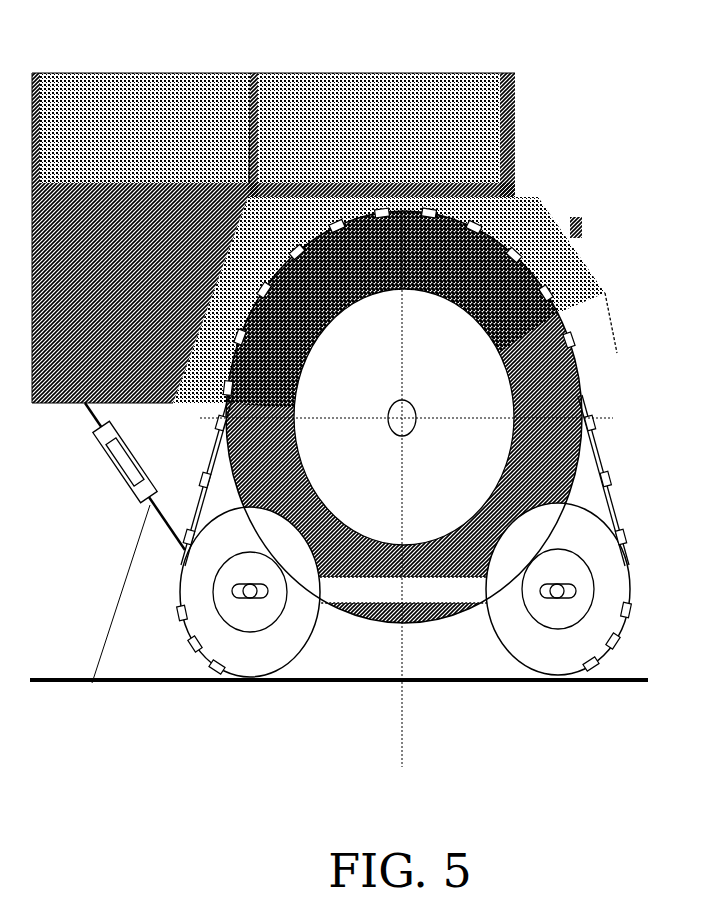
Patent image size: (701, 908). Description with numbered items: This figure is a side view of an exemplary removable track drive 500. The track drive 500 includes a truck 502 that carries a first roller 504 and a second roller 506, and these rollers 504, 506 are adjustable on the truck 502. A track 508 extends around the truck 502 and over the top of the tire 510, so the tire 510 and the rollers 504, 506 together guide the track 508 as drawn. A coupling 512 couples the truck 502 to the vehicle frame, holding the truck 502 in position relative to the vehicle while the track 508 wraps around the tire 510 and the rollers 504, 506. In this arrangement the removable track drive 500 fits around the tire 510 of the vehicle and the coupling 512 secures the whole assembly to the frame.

The track system 500 is at (84, 43).
The track 502 is at (472, 654).
The front idler wheel 504 is at (317, 653).
The rear idler wheel 506 is at (570, 687).
The track guide lugs 508 is at (624, 533).
The drive wheel 510 is at (446, 417).
The tensioner actuator 512 is at (104, 543).